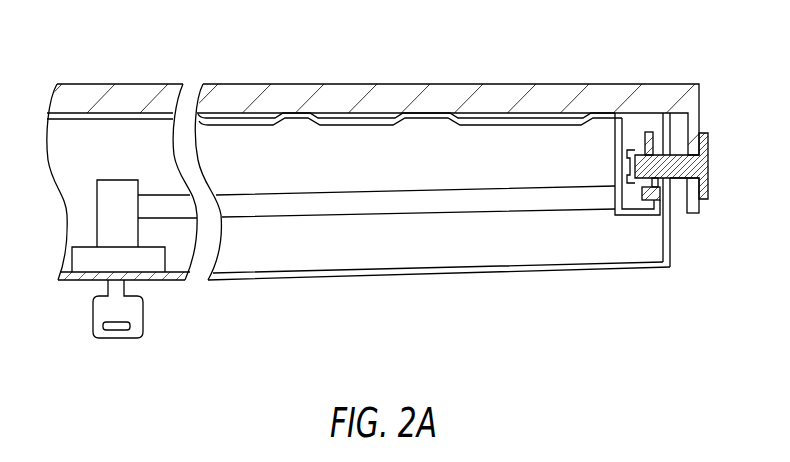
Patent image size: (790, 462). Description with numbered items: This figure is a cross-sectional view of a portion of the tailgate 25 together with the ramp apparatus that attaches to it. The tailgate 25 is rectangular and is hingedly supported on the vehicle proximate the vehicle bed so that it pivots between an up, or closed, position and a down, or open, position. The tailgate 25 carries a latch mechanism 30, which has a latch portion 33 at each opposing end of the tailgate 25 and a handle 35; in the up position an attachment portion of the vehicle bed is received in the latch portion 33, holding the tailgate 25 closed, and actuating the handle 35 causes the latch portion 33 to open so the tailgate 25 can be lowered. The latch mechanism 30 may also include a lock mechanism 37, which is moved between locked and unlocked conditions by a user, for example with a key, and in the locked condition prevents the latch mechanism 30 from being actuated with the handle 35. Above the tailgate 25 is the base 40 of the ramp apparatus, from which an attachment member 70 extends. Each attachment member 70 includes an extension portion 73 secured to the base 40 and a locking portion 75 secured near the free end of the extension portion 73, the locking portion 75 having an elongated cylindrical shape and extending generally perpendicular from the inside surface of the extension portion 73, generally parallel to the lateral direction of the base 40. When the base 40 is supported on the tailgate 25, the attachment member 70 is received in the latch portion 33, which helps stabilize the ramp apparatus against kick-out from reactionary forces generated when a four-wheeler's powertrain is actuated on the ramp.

The tailgate 25 is at (670, 257).
The latch mechanism 30 is at (380, 215).
The latch portion 33 is at (653, 138).
The handle 35 is at (90, 262).
The lock mechanism 37 is at (114, 283).
The base 40 is at (398, 93).
The attachment member 70 is at (708, 148).
The extension portion 73 is at (700, 205).
The locking portion 75 is at (675, 185).